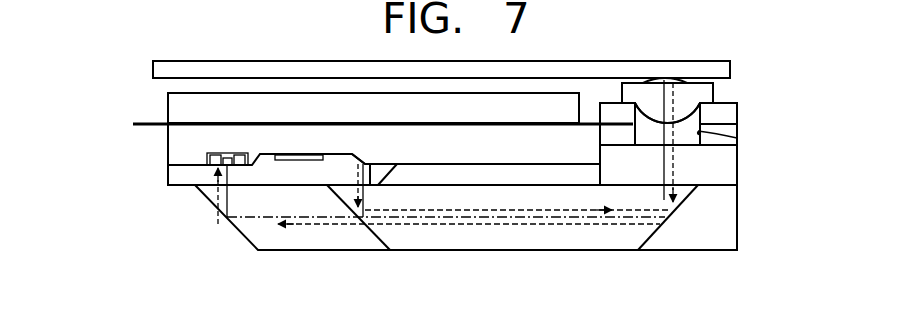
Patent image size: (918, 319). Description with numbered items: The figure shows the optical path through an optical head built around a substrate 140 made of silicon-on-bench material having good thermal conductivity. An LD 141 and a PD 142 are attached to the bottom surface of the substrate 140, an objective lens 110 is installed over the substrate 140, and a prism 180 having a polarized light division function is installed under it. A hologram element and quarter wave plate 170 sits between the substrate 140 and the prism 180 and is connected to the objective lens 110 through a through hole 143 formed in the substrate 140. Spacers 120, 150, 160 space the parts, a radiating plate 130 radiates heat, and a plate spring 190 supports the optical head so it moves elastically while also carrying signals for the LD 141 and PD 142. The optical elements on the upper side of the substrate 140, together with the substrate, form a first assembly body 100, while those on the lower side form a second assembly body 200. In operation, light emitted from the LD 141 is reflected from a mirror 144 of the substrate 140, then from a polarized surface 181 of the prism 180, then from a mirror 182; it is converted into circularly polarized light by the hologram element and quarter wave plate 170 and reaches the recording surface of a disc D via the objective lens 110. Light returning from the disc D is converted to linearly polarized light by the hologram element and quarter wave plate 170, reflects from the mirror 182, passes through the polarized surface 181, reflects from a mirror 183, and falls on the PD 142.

The disc D is at (730, 67).
The first assembly body 100 is at (798, 82).
The objective lens 110 is at (713, 90).
The spacer 120 is at (737, 112).
The radiating plate 130 is at (168, 102).
The substrate 140 is at (168, 147).
The LD 141 is at (297, 162).
The PD 142 is at (233, 151).
The through hole 143 is at (737, 137).
The mirror 144 is at (368, 152).
The spacer 150 is at (168, 175).
The spacer 160 is at (463, 172).
The hologram element and quarter wave plate 170 is at (737, 170).
The prism 180 is at (737, 203).
The polarized surface 181 is at (372, 240).
The mirror 182 is at (657, 232).
The mirror 183 is at (242, 238).
The plate spring 190 is at (133, 124).
The second assembly body 200 is at (798, 157).